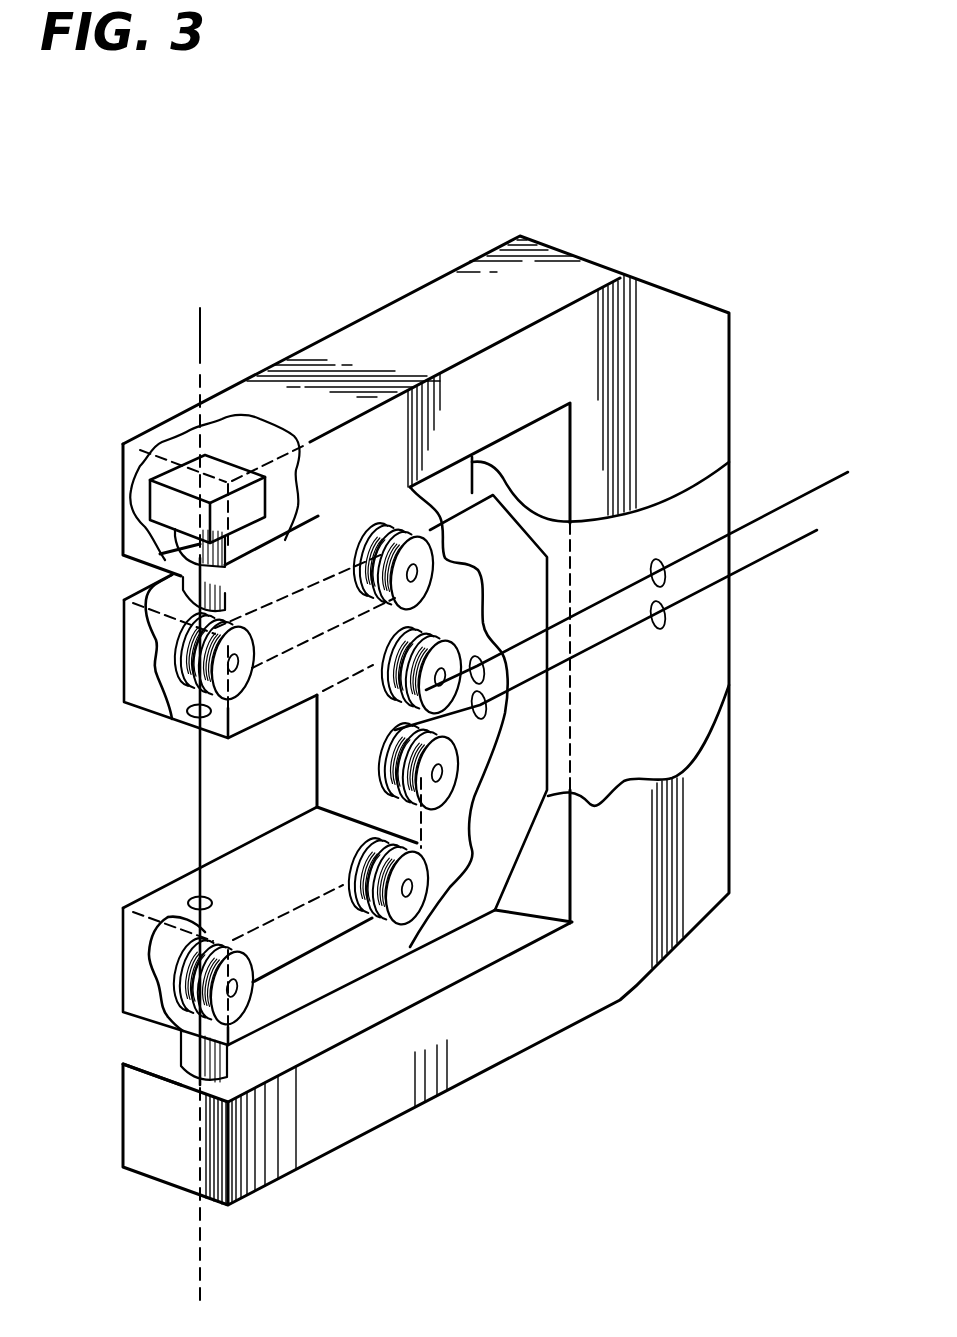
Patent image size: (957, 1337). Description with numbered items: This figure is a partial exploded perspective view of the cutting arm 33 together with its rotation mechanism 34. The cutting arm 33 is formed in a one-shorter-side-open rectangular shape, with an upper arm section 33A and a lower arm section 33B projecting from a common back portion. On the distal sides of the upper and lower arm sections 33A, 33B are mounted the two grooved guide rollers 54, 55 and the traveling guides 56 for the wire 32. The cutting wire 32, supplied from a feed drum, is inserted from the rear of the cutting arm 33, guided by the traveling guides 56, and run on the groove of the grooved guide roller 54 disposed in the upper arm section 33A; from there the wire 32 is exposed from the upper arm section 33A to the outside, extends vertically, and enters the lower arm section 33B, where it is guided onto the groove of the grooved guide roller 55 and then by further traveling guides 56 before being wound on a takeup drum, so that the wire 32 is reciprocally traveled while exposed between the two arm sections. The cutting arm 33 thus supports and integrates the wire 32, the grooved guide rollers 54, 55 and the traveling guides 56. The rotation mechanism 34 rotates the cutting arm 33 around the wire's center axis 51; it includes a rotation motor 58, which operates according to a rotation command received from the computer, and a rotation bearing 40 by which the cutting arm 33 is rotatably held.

The cutting wire 32 is at (199, 822).
The cutting arm 33 is at (465, 905).
The upper arm section 33A is at (124, 683).
The lower arm section 33B is at (124, 960).
The rotation mechanism 34 is at (412, 305).
The rotation bearing 40 is at (183, 580).
The wire's center axis 51 is at (197, 336).
The grooved guide roller 54 is at (178, 652).
The grooved guide roller 55 is at (178, 984).
The traveling guides 56 is at (436, 552).
The rotation motor 58 is at (158, 507).